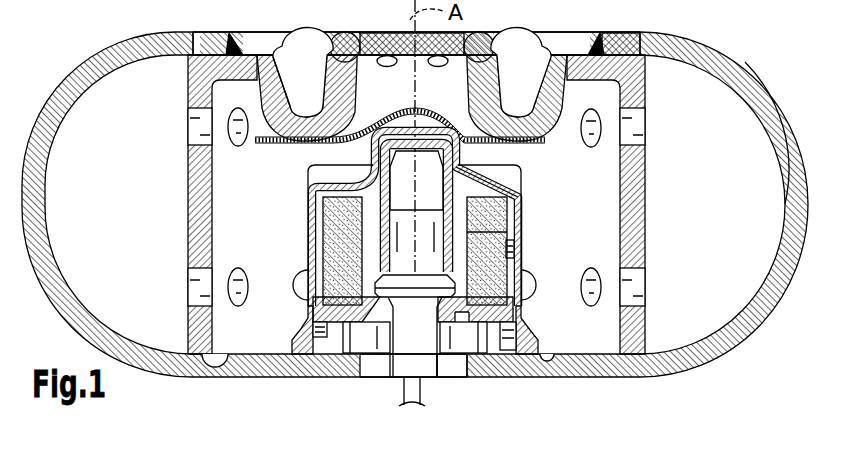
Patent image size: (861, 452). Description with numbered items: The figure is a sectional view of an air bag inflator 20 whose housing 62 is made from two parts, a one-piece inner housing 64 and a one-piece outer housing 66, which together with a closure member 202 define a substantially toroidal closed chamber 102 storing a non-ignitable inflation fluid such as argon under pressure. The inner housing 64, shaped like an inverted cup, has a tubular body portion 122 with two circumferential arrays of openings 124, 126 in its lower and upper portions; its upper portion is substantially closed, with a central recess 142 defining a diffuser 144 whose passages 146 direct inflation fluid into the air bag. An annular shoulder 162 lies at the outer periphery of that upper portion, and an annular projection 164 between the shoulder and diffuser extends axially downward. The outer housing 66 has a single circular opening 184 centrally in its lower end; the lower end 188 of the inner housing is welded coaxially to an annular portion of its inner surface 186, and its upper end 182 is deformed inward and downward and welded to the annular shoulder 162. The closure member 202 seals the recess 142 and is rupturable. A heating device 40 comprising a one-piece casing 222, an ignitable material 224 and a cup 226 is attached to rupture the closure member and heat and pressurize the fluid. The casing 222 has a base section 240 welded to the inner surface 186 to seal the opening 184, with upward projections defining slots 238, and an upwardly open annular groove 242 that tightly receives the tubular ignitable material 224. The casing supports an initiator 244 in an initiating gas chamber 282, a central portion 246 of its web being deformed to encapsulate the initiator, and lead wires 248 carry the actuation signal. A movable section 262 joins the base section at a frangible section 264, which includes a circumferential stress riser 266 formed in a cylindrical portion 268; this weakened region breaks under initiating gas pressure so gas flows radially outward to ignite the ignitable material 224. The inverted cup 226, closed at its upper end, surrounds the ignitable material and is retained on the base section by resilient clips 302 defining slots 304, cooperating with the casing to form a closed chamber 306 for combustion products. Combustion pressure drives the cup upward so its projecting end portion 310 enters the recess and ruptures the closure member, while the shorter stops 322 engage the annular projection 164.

The inflator 20 is at (757, 47).
The heating device 40 is at (526, 240).
The housing 62 is at (588, 29).
The inner housing 64 is at (640, 46).
The outer housing 66 is at (778, 108).
The chamber 102 is at (744, 232).
The tubular body portion 122 is at (645, 196).
The openings 124 is at (645, 270).
The openings 126 is at (646, 126).
The recess 142 is at (384, 55).
The diffuser 144 is at (524, 72).
The passages 146 is at (480, 62).
The annular shoulder 162 is at (193, 33).
The annular projection 164 is at (266, 58).
The upper end 182 is at (222, 33).
The circular opening 184 is at (472, 373).
The inner surface 186 is at (550, 357).
The lower end 188 is at (232, 352).
The closure member 202 is at (455, 100).
The casing 222 is at (466, 381).
The ignitable material 224 is at (337, 231).
The cup 226 is at (306, 193).
The slots 238 is at (512, 248).
The base section 240 is at (305, 345).
The annular groove 242 is at (338, 306).
The initiator 244 is at (404, 292).
The central portion 246 is at (366, 326).
The lead wires 248 is at (462, 333).
The movable section 262 is at (518, 174).
The frangible section 264 is at (379, 219).
The stress riser 266 is at (478, 212).
The cylindrical portion 268 is at (472, 242).
The initiating gas chamber 282 is at (436, 197).
The resilient clips 302 is at (520, 307).
The slots 304 is at (522, 327).
The closed chamber 306 is at (362, 184).
The projecting end portion 310 is at (390, 131).
The stops 322 is at (490, 172).